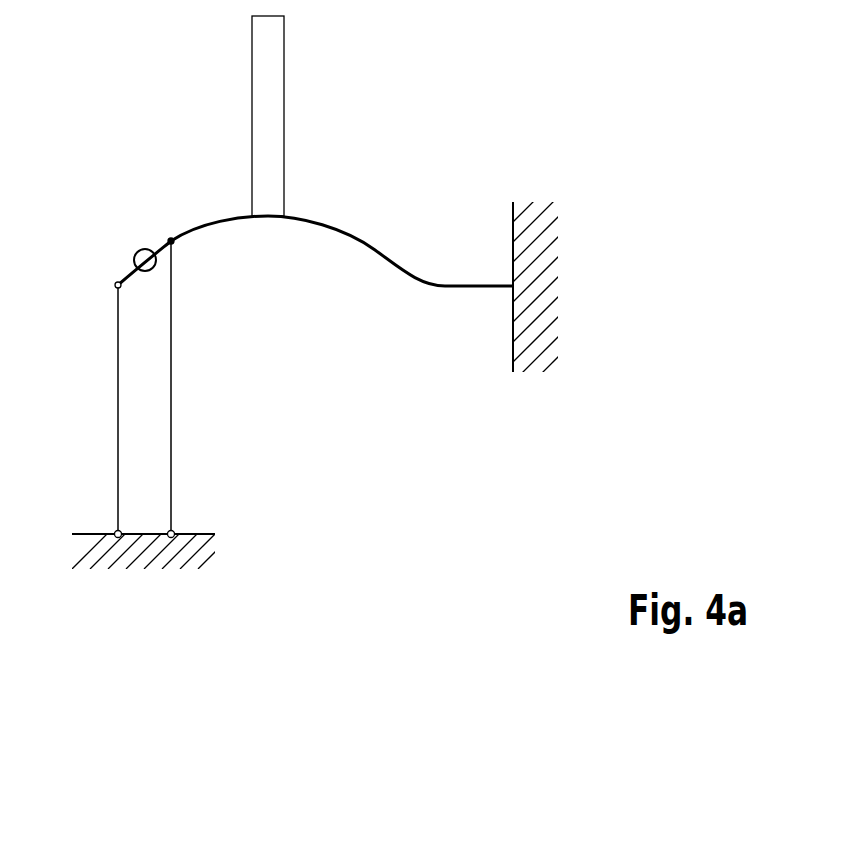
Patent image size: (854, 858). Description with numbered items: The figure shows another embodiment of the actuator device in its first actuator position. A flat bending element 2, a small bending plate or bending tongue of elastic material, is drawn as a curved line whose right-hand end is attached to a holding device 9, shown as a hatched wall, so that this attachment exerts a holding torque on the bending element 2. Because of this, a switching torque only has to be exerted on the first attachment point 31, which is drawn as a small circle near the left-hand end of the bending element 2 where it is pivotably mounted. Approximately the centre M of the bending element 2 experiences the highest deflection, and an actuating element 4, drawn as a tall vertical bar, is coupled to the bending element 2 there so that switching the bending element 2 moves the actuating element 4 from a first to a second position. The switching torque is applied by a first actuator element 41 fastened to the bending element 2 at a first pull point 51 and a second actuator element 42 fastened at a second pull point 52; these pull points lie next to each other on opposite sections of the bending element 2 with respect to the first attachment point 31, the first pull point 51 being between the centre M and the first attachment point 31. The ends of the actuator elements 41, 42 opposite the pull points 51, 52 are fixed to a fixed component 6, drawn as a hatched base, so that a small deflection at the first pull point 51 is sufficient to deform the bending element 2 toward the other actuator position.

The bending element 2 is at (381, 252).
The actuating element 4 is at (272, 99).
The centre of the bending element M is at (268, 220).
The holding device 9 is at (513, 221).
The fixed component 6 is at (192, 533).
The first actuator element 41 is at (173, 404).
The second actuator element 42 is at (117, 404).
The first pull point 51 is at (171, 238).
The second pull point 52 is at (116, 283).
The first attachment point 31 is at (138, 252).